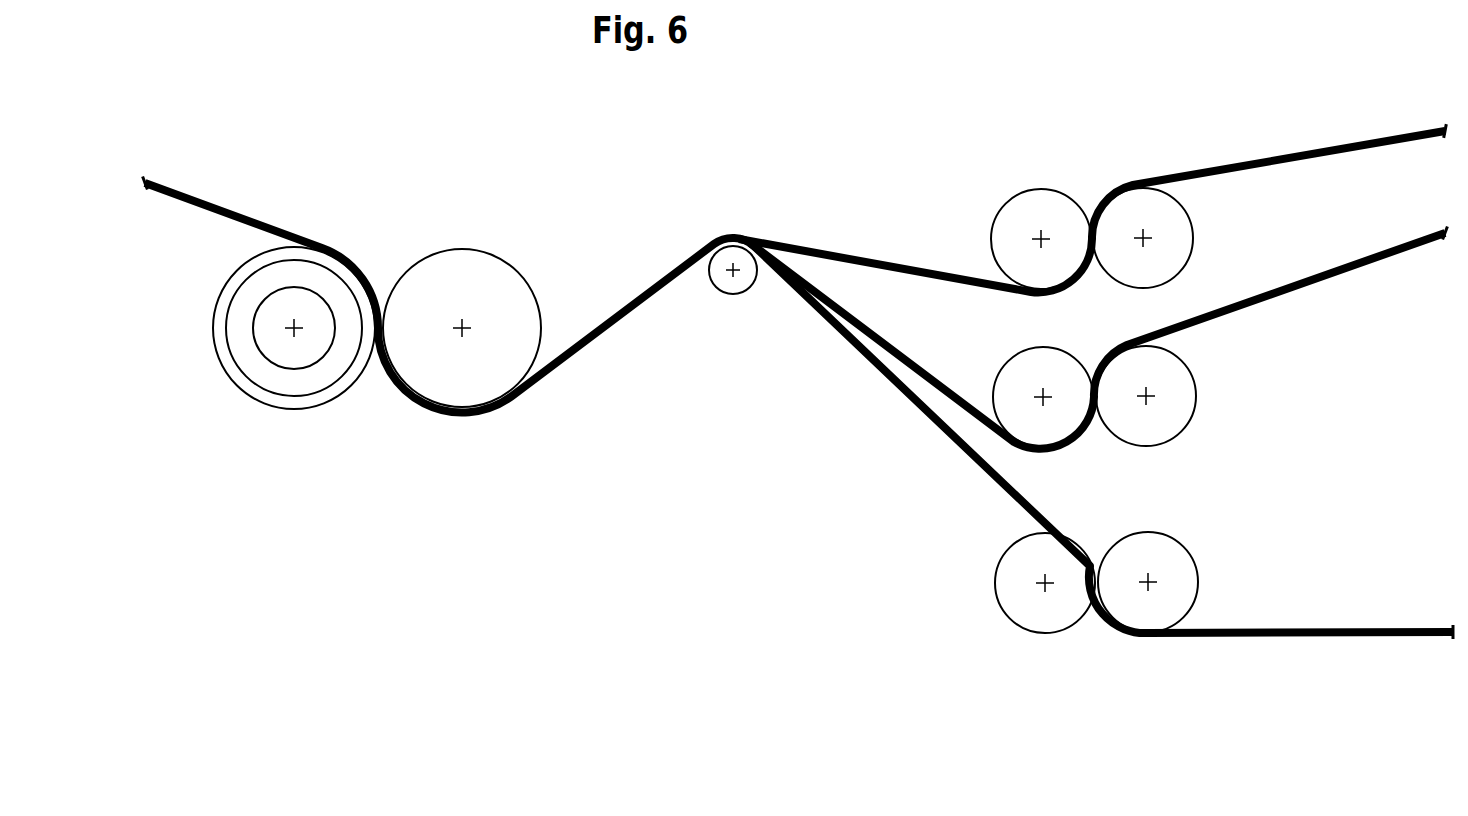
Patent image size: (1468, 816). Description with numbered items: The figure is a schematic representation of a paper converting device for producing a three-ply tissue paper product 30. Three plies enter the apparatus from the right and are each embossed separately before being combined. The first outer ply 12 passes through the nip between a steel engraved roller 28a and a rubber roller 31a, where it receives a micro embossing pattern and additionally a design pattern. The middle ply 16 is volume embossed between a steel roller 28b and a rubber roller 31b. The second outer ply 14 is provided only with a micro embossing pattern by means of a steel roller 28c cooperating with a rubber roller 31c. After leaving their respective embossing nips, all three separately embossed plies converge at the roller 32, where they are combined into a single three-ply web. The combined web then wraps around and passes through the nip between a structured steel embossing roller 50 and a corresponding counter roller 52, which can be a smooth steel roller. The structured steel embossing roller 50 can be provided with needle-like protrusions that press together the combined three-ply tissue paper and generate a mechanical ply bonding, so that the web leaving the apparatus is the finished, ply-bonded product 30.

The three ply product 30 is at (206, 199).
The structured steel embossing roller 50 is at (267, 382).
The counter roller 52 is at (462, 263).
The roller 32 is at (727, 285).
The first outer ply 12 is at (1323, 151).
The middle ply 16 is at (1345, 272).
The second outer ply 14 is at (1355, 628).
The steel engraved roller 28a is at (1007, 219).
The steel roller 28b is at (1007, 388).
The steel roller 28c is at (1007, 585).
The rubber roller 31a is at (1172, 229).
The rubber roller 31b is at (1178, 387).
The rubber roller 31c is at (1180, 582).